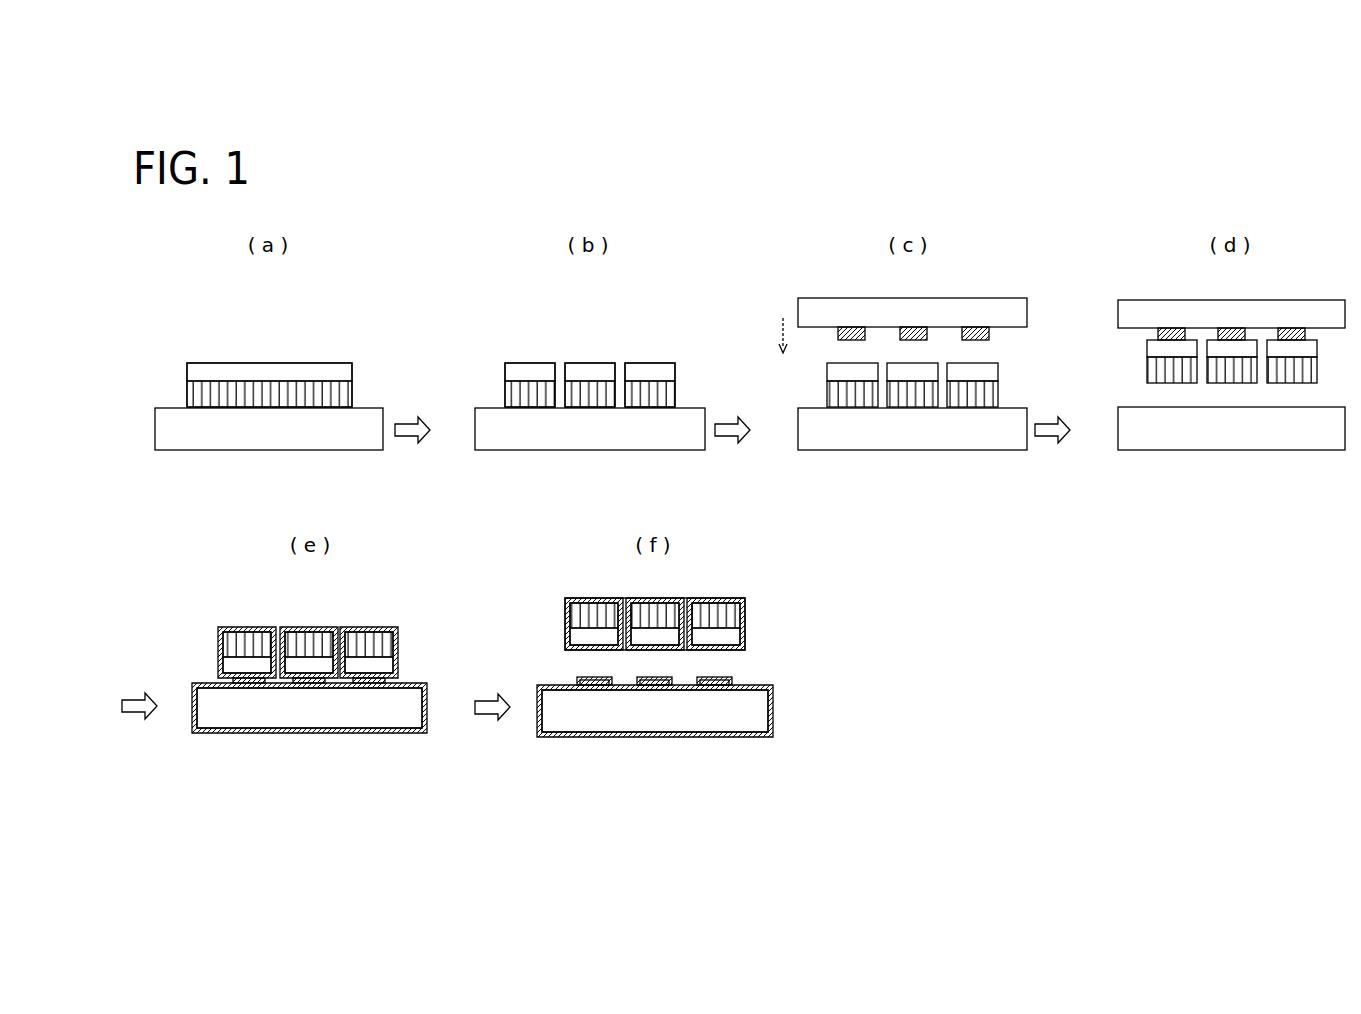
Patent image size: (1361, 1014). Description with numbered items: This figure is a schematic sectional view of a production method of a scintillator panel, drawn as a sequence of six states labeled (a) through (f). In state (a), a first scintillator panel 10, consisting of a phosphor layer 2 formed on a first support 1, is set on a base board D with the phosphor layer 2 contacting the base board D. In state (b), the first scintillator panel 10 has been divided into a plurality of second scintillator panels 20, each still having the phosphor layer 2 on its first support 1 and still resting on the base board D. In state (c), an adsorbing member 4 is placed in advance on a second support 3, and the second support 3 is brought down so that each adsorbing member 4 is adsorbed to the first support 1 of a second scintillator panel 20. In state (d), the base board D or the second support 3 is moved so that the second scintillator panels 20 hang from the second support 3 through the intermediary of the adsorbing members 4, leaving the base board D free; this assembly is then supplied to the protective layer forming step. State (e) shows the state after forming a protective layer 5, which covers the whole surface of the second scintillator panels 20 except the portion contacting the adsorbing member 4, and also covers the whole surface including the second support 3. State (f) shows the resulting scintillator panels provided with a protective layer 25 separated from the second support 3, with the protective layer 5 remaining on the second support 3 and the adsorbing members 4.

The first support 1 is at (190, 370).
The phosphor layer 2 is at (190, 392).
The second support 3 is at (803, 309).
The adsorbing member 4 is at (990, 334).
The protective layer 5 is at (218, 634).
The first scintillator panel 10 is at (355, 363).
The second scintillator panel 20 is at (555, 358).
The scintillator panel provided with a protective layer 25 is at (794, 603).
The base board D is at (170, 425).